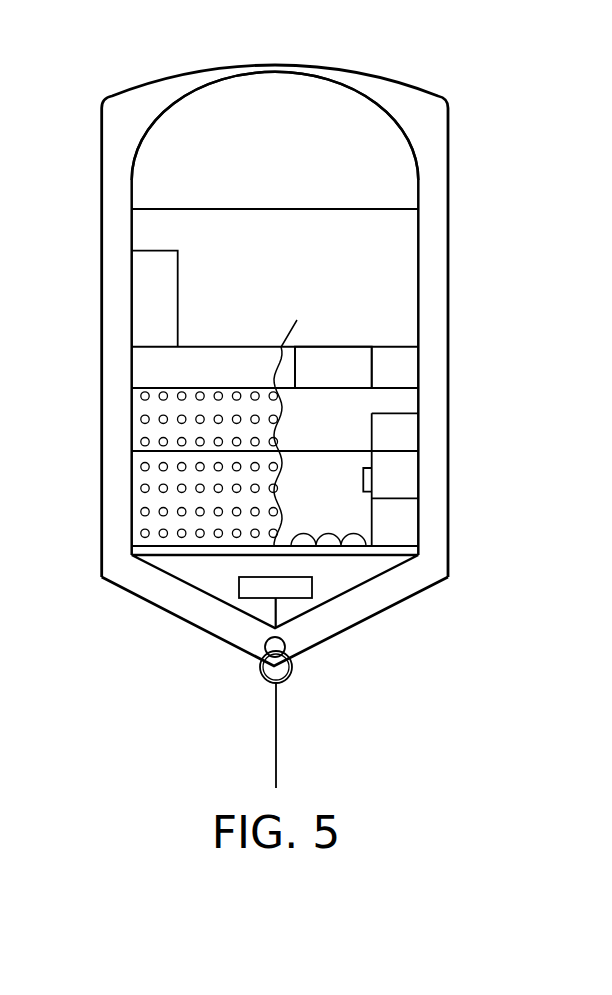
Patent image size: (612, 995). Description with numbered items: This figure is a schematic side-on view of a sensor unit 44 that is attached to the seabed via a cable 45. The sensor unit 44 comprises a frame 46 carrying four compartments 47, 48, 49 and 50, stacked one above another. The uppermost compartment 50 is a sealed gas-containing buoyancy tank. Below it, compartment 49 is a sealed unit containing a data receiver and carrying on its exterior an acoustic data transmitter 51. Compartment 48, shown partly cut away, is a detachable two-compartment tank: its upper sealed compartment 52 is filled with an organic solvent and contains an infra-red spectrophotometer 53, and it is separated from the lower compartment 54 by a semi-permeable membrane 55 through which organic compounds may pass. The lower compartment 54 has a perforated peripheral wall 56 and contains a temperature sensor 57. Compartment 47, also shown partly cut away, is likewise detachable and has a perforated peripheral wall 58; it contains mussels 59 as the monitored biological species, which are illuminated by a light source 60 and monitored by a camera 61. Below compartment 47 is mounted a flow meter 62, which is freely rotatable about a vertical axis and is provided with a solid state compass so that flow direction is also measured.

The sensor unit 44 is at (450, 317).
The cable 45 is at (276, 727).
The frame 46 is at (438, 499).
The compartment 47 is at (131, 477).
The compartment 48 is at (143, 367).
The compartment 49 is at (398, 241).
The compartment 50 is at (277, 88).
The acoustic data transmitter 51 is at (143, 290).
The upper sealed compartment 52 is at (362, 357).
The infra-red spectrophotometer 53 is at (398, 372).
The lower compartment 54 is at (333, 402).
The semi-permeable membrane 55 is at (292, 421).
The perforated peripheral wall 56 is at (131, 410).
The temperature sensor 57 is at (398, 428).
The perforated peripheral wall 58 is at (143, 518).
The mussels 59 is at (331, 530).
The light source 60 is at (398, 532).
The camera 61 is at (383, 469).
The flow meter 62 is at (300, 598).